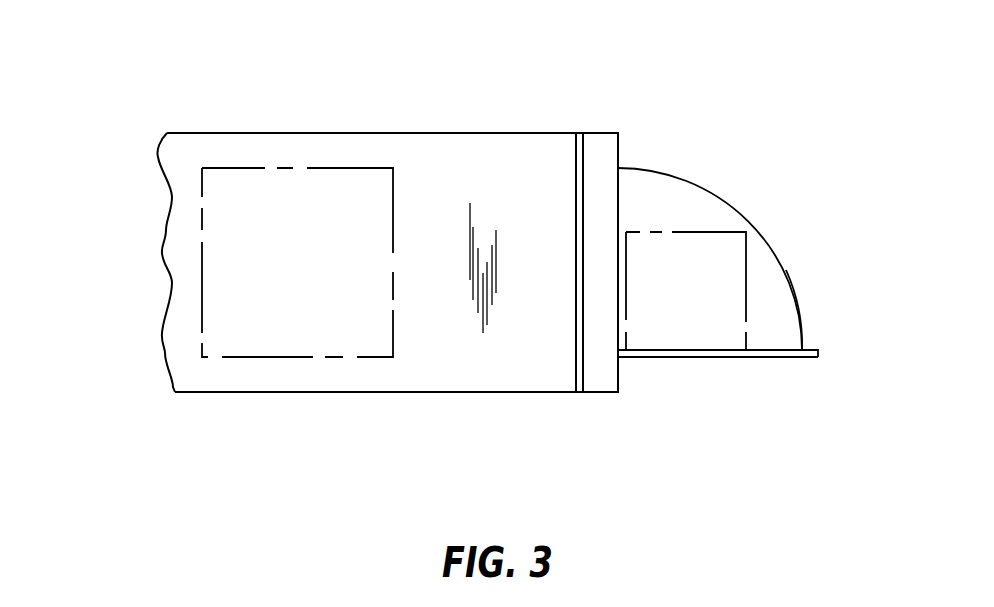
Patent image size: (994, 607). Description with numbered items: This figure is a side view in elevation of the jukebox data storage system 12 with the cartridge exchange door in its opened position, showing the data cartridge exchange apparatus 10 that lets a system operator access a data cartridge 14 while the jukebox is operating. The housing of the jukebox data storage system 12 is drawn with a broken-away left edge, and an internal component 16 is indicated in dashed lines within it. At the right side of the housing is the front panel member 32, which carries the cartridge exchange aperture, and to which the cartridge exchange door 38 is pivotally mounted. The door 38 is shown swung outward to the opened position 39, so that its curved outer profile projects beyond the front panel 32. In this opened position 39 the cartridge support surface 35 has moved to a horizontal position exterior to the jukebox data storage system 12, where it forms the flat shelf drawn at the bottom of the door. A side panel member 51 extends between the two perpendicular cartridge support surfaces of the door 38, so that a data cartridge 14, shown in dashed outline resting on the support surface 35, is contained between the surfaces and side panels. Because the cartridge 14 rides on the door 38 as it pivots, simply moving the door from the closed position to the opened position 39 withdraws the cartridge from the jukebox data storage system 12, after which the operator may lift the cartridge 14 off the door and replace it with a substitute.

The data cartridge exchange apparatus 10 is at (149, 64).
The jukebox data storage system 12 is at (150, 334).
The data cartridge 14 is at (746, 269).
The electronics module 16 is at (328, 168).
The front panel member 32 is at (618, 146).
The cartridge support surface 35 is at (718, 358).
The cartridge exchange door 38 is at (738, 200).
The opened position 39 is at (820, 355).
The side panel member 51 is at (803, 308).